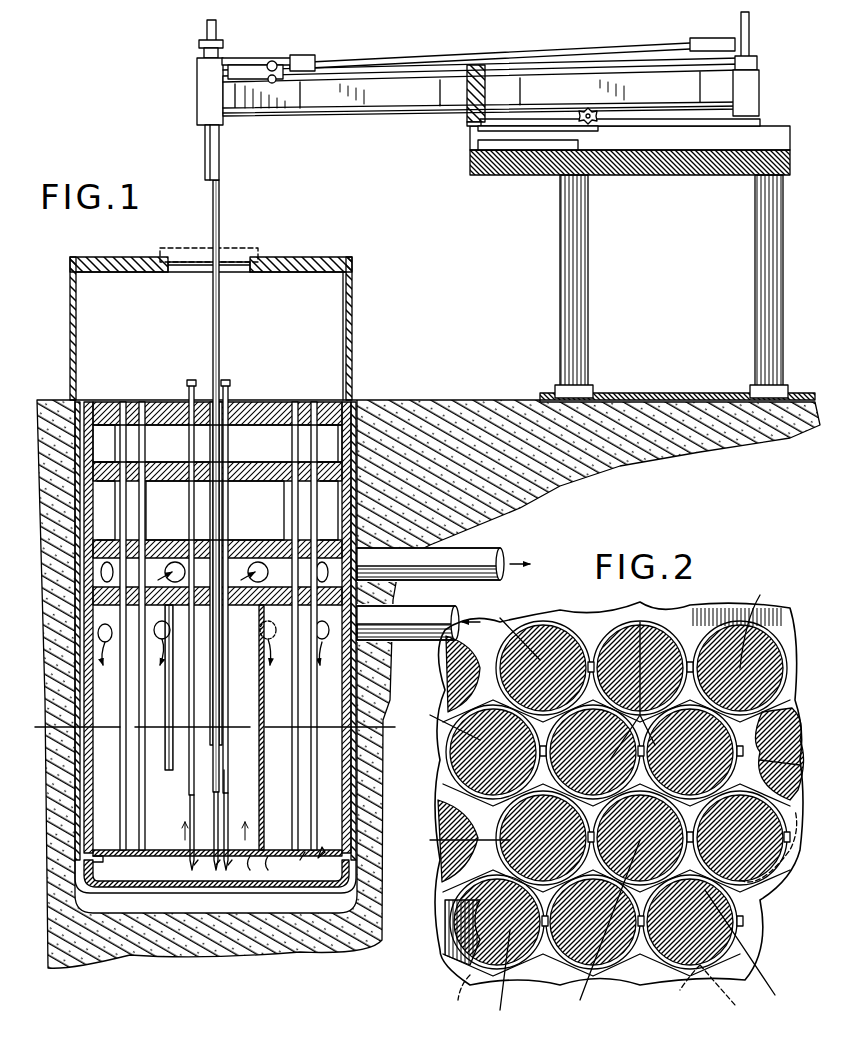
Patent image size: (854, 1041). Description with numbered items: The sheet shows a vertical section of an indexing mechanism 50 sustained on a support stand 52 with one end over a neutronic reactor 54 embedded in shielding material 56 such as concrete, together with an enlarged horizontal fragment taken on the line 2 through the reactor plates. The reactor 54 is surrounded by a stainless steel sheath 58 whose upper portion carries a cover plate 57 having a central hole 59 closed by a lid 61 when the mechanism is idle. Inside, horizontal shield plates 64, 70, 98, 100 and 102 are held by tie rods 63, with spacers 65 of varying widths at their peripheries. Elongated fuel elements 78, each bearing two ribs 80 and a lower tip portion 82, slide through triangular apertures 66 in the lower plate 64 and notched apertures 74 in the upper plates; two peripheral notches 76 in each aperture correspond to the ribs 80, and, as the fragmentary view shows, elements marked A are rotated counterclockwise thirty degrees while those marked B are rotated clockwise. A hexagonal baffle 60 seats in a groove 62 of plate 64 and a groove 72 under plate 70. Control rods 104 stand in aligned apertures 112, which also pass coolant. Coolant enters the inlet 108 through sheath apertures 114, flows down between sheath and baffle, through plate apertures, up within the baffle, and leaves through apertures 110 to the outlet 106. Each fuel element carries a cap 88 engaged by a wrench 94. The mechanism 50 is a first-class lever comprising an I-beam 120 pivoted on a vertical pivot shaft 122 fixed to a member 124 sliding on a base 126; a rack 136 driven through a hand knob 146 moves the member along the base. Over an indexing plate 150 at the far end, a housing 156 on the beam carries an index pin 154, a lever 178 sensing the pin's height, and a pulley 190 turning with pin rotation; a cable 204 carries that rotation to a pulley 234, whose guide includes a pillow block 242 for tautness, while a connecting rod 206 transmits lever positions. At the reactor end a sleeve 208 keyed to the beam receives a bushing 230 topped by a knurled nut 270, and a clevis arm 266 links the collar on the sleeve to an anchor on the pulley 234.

In FIG. 1, the indexing mechanism 50 is at (358, 117).
In FIG. 1, the support stand 52 is at (655, 168).
In FIG. 1, the neutronic reactor 54 is at (360, 320).
In FIG. 1, the shielding material 56 is at (418, 400).
In FIG. 1, the cover plate 57 is at (318, 258).
In FIG. 1, the sheath 58 is at (352, 372).
In FIG. 1, the hole 59 is at (238, 258).
In FIG. 1, the hexagonal baffle 60 is at (262, 820).
In FIG. 1, the lid 61 is at (180, 249).
In FIG. 1, the hexagonal groove 62 is at (262, 888).
In FIG. 1, the tie rods 63 is at (95, 820).
In FIG. 1, the lower shield plate 64 is at (158, 856).
In FIG. 1, the spacer 65 is at (217, 482).
In FIG. 1, the apertures 66 is at (255, 871).
In FIG. 1, the shield plate 70 is at (380, 568).
In FIG. 1, the groove 72 is at (158, 628).
In FIG. 1, the apertures 74 is at (258, 442).
In FIG. 2, the apertures 74 is at (555, 626).
In FIG. 2, the peripheral notches 76 is at (693, 620).
In FIG. 1, the fuel elements 78 is at (229, 400).
In FIG. 2, the fuel elements 78 is at (495, 668).
In FIG. 1, the ribs 80 is at (226, 764).
In FIG. 2, the ribs 80 is at (627, 908).
In FIG. 1, the rod tip 82 is at (209, 874).
In FIG. 1, the cap 88 is at (190, 383).
In FIG. 1, the wrench 94 is at (222, 196).
In FIG. 1, the shield plate 98 is at (148, 540).
In FIG. 2, the shield plate 98 is at (598, 628).
In FIG. 1, the shield plate 100 is at (217, 443).
In FIG. 1, the upper shield plate 102 is at (262, 402).
In FIG. 1, the control rods 104 is at (141, 402).
In FIG. 1, the outlet 106 is at (443, 564).
In FIG. 1, the inlet 108 is at (418, 623).
In FIG. 1, the apertures 110 is at (428, 556).
In FIG. 1, the apertures 112 is at (98, 866).
In FIG. 1, the apertures 114 is at (406, 614).
In FIG. 1, the I-beam 120 is at (467, 124).
In FIG. 1, the pivot shaft 122 is at (470, 128).
In FIG. 1, the member 124 is at (560, 130).
In FIG. 1, the base 126 is at (533, 140).
In FIG. 1, the rack 136 is at (600, 126).
In FIG. 1, the hand knob 146 is at (588, 108).
In FIG. 1, the indexing plate 150 is at (765, 126).
In FIG. 1, the index pin 154 is at (750, 33).
In FIG. 1, the housing 156 is at (760, 90).
In FIG. 1, the lever 178 is at (718, 39).
In FIG. 1, the pulley 190 is at (757, 66).
In FIG. 1, the cable 204 is at (408, 124).
In FIG. 1, the connecting rod 206 is at (570, 46).
In FIG. 1, the sleeve 208 is at (197, 110).
In FIG. 1, the bushing 230 is at (205, 136).
In FIG. 1, the pulley 234 is at (300, 55).
In FIG. 1, the pillow block 242 is at (278, 64).
In FIG. 1, the clevis arm 266 is at (250, 57).
In FIG. 1, the nut 270 is at (199, 44).
In FIG. 1, the section line 2 is at (203, 523).
In FIG. 2, the fuel elements rotated counterclockwise A is at (608, 804).
In FIG. 2, the fuel elements rotated clockwise B is at (611, 803).